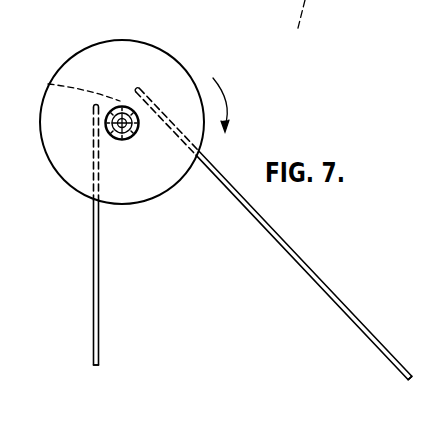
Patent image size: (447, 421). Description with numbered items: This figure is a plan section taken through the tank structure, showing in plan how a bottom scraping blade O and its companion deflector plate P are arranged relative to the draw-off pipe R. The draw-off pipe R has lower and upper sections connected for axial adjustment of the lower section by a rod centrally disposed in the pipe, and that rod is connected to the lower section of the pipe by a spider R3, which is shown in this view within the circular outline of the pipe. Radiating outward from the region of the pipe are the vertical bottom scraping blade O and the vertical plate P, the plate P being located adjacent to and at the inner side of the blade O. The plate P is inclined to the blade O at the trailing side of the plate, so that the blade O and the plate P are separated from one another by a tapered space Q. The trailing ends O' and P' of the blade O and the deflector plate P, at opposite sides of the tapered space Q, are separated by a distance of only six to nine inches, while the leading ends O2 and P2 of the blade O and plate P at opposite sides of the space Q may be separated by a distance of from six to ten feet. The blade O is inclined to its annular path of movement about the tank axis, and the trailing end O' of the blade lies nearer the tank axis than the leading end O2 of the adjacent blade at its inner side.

The draw-off pipe R is at (122, 122).
The spider R3 is at (122, 141).
The bottom scraping blade O is at (304, 266).
The trailing end of blade O' is at (177, 107).
The leading end of blade O2 is at (402, 380).
The vertical deflector plate P is at (75, 282).
The trailing end of deflector plate P' is at (51, 153).
The leading end of deflector plate P2 is at (93, 363).
The tapered space Q is at (48, 84).